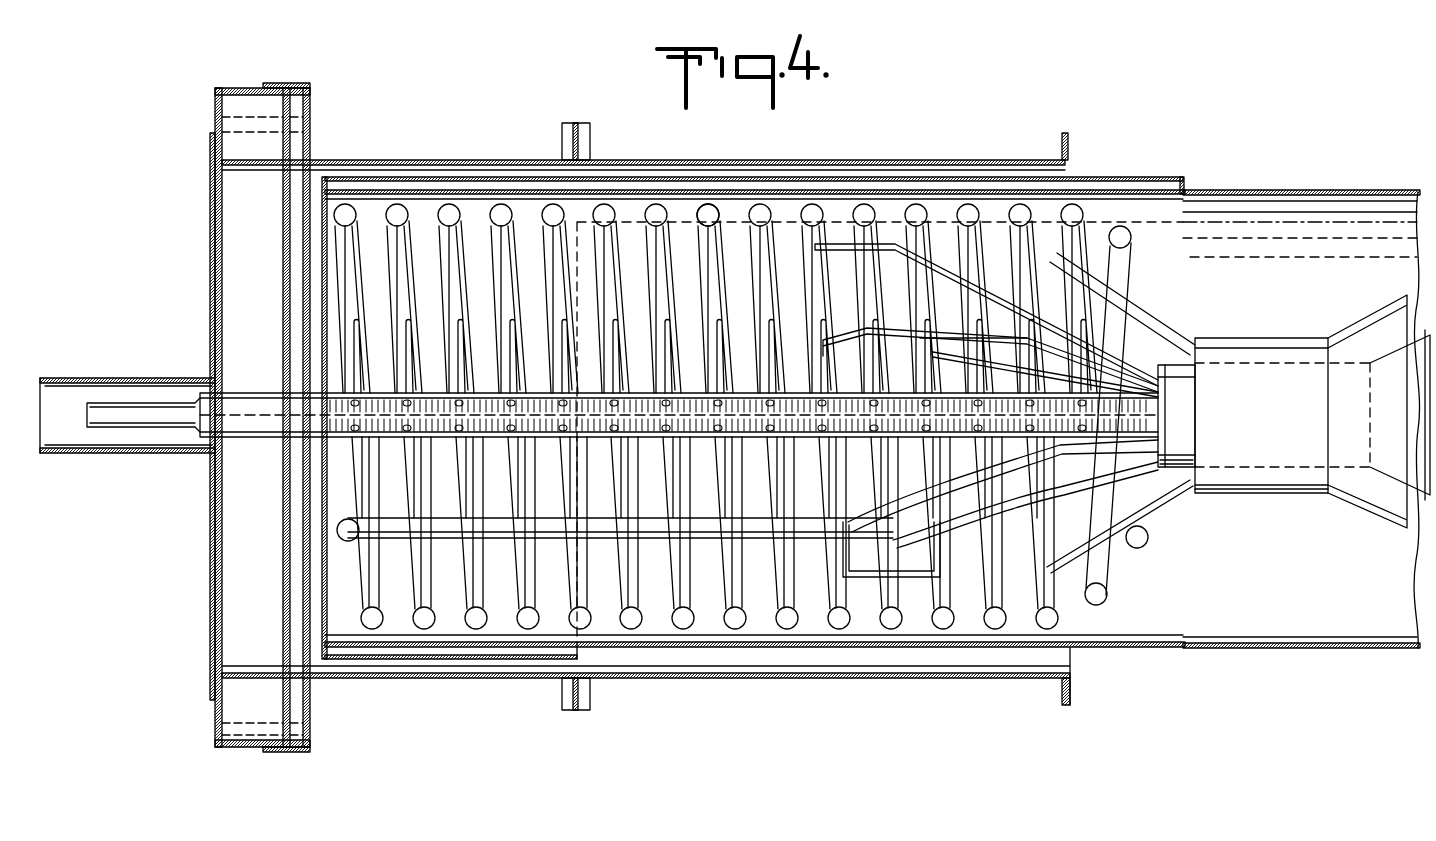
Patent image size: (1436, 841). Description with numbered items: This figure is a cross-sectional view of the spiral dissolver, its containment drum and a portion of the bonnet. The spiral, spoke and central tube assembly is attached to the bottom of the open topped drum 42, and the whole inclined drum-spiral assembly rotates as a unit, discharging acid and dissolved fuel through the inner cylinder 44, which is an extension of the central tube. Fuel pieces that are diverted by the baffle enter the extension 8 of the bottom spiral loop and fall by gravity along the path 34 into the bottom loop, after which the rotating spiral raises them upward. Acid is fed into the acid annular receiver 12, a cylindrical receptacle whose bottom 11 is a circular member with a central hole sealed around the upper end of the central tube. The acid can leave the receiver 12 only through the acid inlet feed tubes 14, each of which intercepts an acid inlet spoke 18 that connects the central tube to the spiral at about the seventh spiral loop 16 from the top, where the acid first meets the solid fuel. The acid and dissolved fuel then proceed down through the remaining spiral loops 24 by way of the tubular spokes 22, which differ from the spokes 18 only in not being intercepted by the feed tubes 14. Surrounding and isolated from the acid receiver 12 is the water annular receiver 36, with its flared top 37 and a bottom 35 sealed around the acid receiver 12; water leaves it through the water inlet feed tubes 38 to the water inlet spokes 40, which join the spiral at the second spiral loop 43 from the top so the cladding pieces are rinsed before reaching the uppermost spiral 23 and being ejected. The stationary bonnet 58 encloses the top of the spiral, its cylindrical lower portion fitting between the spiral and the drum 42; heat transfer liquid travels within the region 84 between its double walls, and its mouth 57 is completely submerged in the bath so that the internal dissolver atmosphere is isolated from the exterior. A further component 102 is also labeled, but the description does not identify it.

The flange 102 is at (293, 86).
The region between double walls 84 is at (480, 178).
The tubular spokes 22 is at (700, 240).
The spiral loop 24 is at (728, 212).
The spiral loop 16 is at (830, 235).
The acid inlet feed tubes 14 is at (888, 245).
The second spiral loop 43 is at (1085, 240).
The water inlet spoke 40 is at (1085, 252).
The water inlet feed tubes 38 is at (1148, 320).
The flared top 37 is at (1358, 322).
The bottom of acid annular receiver 11 is at (1170, 380).
The acid annular receiver 12 is at (1262, 365).
The inner cylinder 44 is at (133, 420).
The mouth of bonnet 57 is at (322, 592).
The drum 42 is at (400, 677).
The extension 8 is at (708, 540).
The acid inlet spoke 18 is at (848, 593).
The bottom of water annular receiver 35 is at (1195, 492).
The water annular receiver 36 is at (1268, 494).
The path 34 is at (1190, 482).
The uppermost spiral 23 is at (1130, 545).
The bonnet 58 is at (1268, 645).